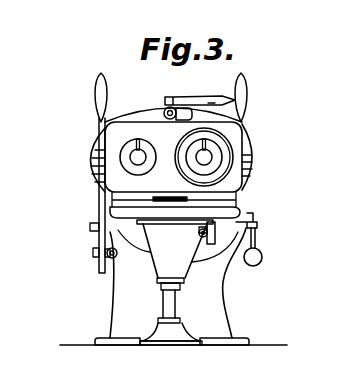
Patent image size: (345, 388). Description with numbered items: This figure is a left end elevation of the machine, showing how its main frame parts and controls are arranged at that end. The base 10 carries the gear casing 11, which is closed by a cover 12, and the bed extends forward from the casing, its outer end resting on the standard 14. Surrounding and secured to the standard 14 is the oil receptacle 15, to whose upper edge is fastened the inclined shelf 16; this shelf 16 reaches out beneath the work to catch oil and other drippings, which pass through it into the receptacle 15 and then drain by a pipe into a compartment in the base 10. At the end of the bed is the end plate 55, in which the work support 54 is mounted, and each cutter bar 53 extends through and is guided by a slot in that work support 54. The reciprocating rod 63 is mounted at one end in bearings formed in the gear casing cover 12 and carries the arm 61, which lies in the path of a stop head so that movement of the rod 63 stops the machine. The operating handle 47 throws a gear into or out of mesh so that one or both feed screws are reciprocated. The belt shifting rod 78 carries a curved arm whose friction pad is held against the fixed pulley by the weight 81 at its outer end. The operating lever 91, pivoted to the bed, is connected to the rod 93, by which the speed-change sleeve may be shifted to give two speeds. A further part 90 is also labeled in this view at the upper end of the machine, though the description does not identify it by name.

The base 10 is at (233, 322).
The gear casing 11 is at (252, 172).
The cover 12 is at (124, 110).
The standard 14 is at (160, 302).
The oil receptacle 15 is at (174, 258).
The inclined shelf 16 is at (128, 213).
The operating handle 47 is at (215, 95).
The cutter bar 53 is at (213, 148).
The work support 54 is at (208, 157).
The end plate 55 is at (120, 128).
The arm 61 is at (182, 110).
The reciprocating rod 63 is at (165, 108).
The belt shifting rod 78 is at (117, 256).
The weight 81 is at (263, 258).
The antenna 90 is at (253, 92).
The operating lever 91 is at (216, 228).
The rod 93 is at (199, 234).